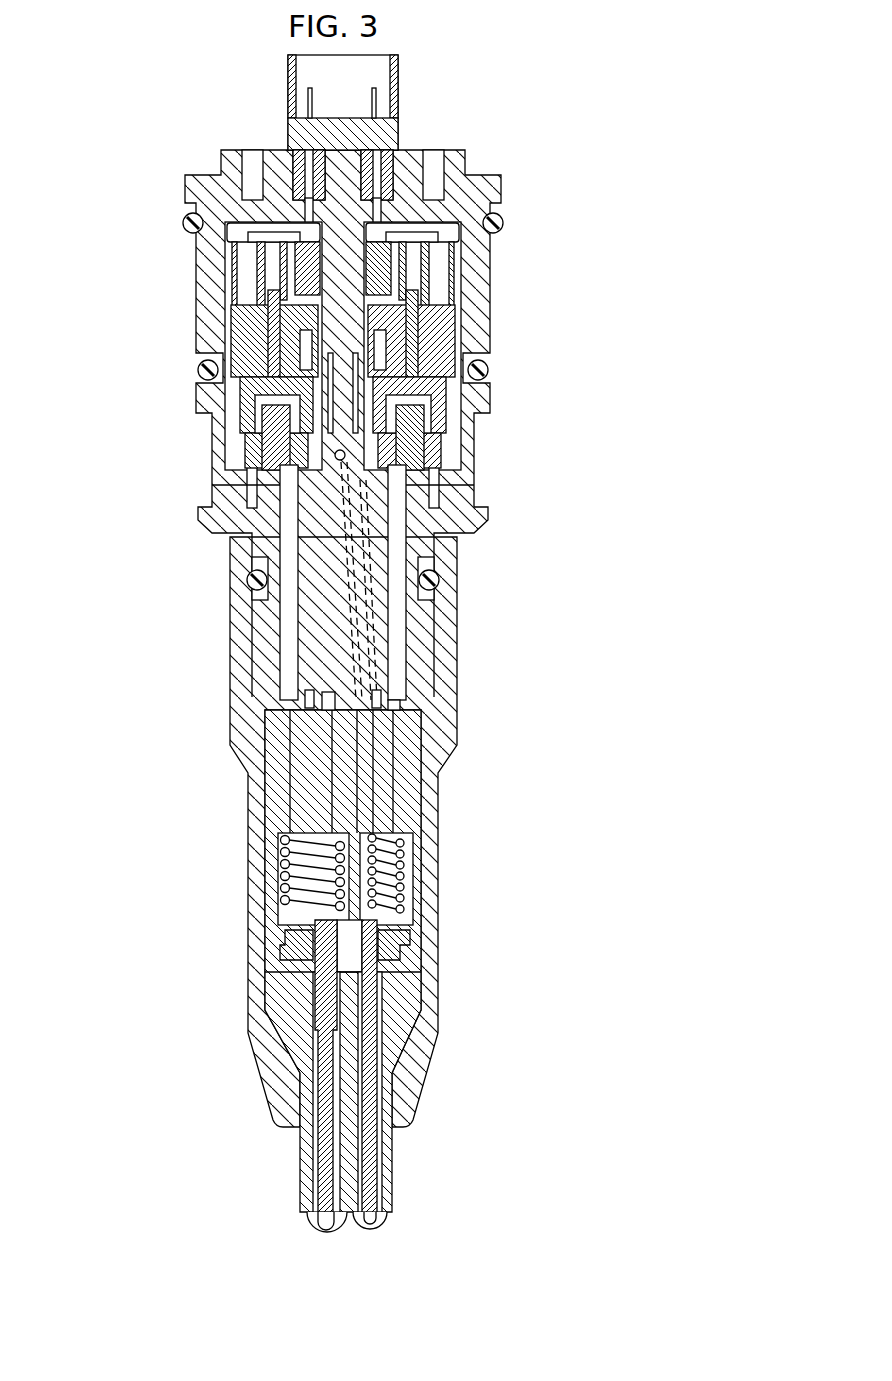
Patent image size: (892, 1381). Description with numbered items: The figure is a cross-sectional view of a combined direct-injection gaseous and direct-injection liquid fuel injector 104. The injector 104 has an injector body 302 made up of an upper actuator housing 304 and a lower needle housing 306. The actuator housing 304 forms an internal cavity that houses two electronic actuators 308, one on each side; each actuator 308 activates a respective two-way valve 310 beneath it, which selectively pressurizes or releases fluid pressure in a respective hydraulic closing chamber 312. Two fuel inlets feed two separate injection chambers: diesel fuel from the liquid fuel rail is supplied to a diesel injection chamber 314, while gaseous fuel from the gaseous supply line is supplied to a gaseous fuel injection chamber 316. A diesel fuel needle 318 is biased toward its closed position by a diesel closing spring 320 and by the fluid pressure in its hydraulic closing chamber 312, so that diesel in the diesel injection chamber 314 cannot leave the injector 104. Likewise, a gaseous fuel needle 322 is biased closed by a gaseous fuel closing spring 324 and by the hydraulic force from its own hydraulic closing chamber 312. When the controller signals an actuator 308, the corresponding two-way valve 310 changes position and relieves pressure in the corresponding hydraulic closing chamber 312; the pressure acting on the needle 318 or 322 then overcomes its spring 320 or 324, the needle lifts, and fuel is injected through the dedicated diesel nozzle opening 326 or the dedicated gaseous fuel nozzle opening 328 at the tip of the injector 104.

The injector 104 is at (533, 184).
The injector body 302 is at (490, 534).
The actuator housing 304 is at (207, 278).
The needle housing 306 is at (230, 723).
The electronic actuator 308 is at (231, 320).
The two-way valve 310 is at (227, 435).
The hydraulic closing chamber 312 is at (272, 693).
The diesel injection chamber 314 is at (290, 930).
The gaseous fuel injection chamber 316 is at (400, 930).
The diesel fuel needle 318 is at (337, 1082).
The diesel closing spring 320 is at (280, 853).
The gaseous fuel needle 322 is at (367, 1092).
The gaseous fuel closing spring 324 is at (395, 850).
The diesel nozzle opening 326 is at (298, 1236).
The gaseous fuel nozzle opening 328 is at (393, 1228).